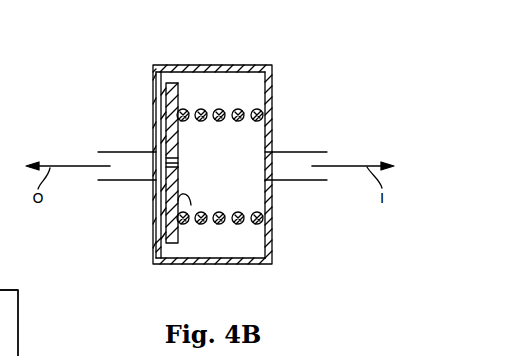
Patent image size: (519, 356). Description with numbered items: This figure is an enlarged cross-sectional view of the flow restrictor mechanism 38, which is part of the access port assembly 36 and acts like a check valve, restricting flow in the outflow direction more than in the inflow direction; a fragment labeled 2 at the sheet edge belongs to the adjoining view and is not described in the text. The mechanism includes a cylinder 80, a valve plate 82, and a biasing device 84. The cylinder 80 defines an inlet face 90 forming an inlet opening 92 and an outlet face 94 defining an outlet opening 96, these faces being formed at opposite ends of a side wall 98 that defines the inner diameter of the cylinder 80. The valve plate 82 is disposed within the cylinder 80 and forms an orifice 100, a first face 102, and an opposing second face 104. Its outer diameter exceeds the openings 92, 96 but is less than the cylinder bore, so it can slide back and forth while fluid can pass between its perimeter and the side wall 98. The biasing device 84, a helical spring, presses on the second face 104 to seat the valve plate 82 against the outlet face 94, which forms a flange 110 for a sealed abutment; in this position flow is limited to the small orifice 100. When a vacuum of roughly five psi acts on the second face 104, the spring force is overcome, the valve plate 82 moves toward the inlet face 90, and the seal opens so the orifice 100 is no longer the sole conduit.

The flow restrictor mechanism 38 is at (230, 24).
The cylinder 80 is at (252, 62).
The valve plate 82 is at (170, 83).
The biasing device 84 is at (226, 109).
The inlet face 90 is at (272, 224).
The inlet opening 92 is at (273, 158).
The outlet face 94 is at (153, 213).
The outlet opening 96 is at (156, 180).
The side wall 98 is at (235, 265).
The orifice 100 is at (168, 158).
The first face 102 is at (161, 133).
The second face 104 is at (191, 205).
The flange 110 is at (162, 232).
The system 2 is at (9, 238).
The access port assembly 36 is at (0, 288).